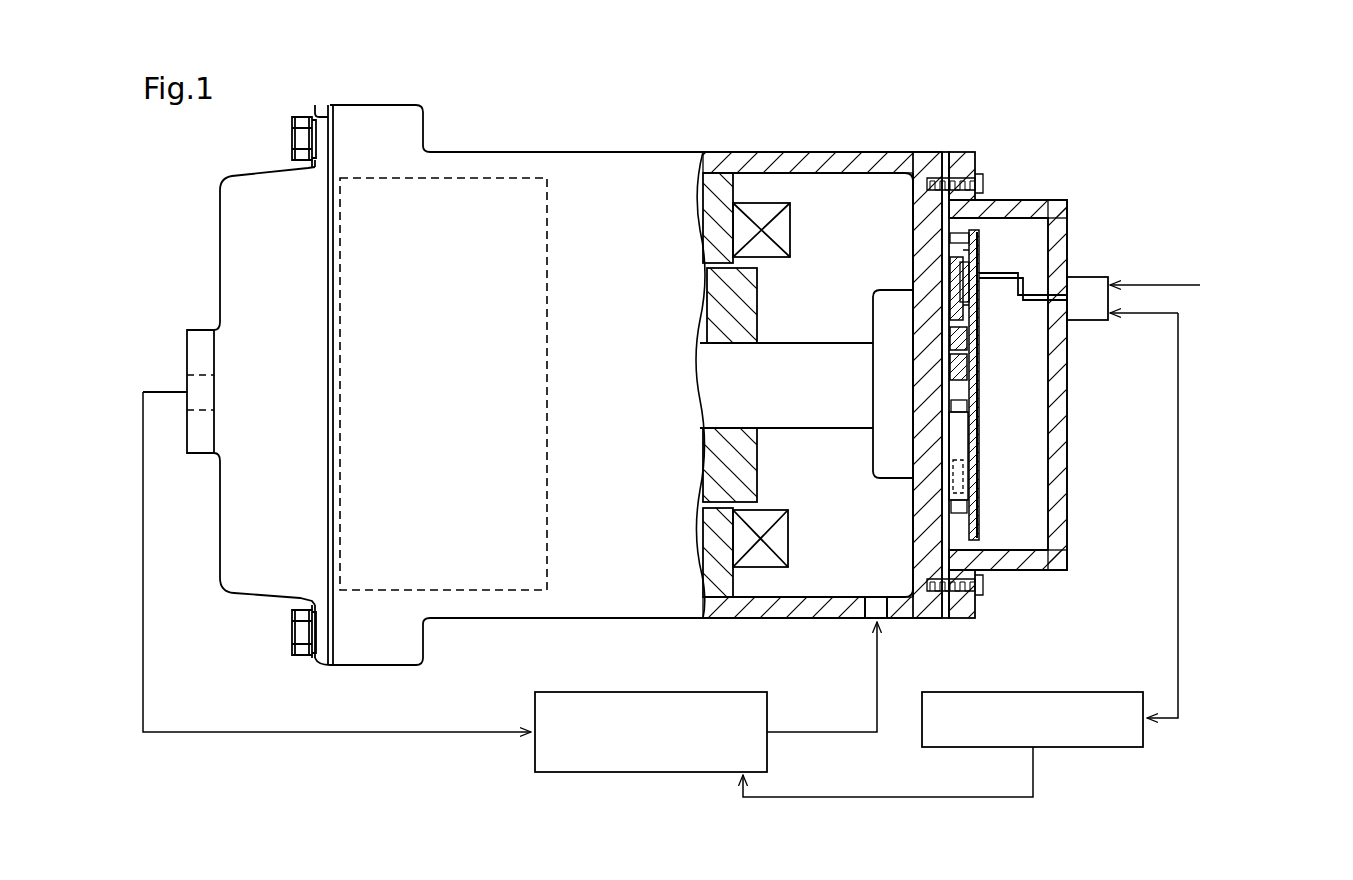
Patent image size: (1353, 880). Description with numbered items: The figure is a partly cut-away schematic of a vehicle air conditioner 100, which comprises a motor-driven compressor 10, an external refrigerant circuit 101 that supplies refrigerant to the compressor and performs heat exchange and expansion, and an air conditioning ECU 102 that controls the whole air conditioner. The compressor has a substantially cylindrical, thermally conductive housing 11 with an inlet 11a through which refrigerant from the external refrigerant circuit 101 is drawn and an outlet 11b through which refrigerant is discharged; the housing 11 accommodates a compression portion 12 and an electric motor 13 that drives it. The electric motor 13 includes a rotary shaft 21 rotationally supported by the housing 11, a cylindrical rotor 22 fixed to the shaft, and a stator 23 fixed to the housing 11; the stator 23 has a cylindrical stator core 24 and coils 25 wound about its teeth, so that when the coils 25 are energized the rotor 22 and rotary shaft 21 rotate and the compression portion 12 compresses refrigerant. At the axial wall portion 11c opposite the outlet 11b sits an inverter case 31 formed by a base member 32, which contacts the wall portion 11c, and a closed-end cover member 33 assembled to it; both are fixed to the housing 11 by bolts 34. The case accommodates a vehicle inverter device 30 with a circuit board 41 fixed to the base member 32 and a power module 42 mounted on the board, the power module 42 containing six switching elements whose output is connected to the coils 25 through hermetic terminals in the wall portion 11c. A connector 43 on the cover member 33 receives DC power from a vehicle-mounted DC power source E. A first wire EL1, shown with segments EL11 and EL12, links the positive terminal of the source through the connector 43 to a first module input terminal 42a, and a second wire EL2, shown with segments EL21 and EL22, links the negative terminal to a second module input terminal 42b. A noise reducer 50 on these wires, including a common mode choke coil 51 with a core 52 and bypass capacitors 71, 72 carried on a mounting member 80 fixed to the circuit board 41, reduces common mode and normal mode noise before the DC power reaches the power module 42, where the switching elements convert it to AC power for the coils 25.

The motor-driven compressor 10 is at (588, 149).
The housing 11 is at (531, 152).
The inlet 11a is at (878, 597).
The outlet 11b is at (182, 387).
The wall portion 11c is at (918, 223).
The compression portion 12 is at (476, 178).
The electric motor 13 is at (730, 169).
The rotary shaft 21 is at (815, 415).
The rotor 22 is at (753, 297).
The stator 23 is at (838, 206).
The stator core 24 is at (728, 214).
The coils 25 is at (778, 238).
The vehicle inverter device 30 is at (987, 456).
The inverter case 31 is at (1069, 216).
The base member 32 is at (942, 152).
The cover member 33 is at (969, 152).
The bolts 34 is at (984, 182).
The circuit board 41 is at (981, 521).
The power module 42 is at (947, 448).
The first module input terminal 42a is at (980, 411).
The second module input terminal 42b is at (948, 525).
The connector 43 is at (1109, 273).
The noise reducer 50 is at (946, 265).
The common mode choke coil 51 is at (945, 305).
The core 52 is at (945, 310).
The bypass capacitor 71 is at (980, 341).
The bypass capacitor 72 is at (980, 365).
The mounting member 80 is at (979, 254).
The vehicle air conditioner 100 is at (1109, 137).
The external refrigerant circuit 101 is at (730, 692).
The air conditioning ECU 102 is at (1053, 692).
The first wire EL1 is at (1135, 346).
The first wire segment EL11 is at (980, 383).
The first wire segment EL12 is at (980, 380).
The second wire EL2 is at (1023, 286).
The second wire segment EL21 is at (1023, 290).
The second wire segment EL22 is at (981, 474).
The DC power source E is at (1202, 289).